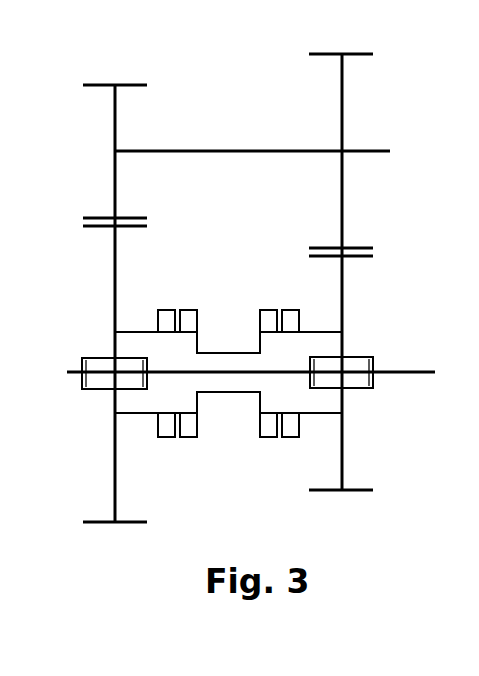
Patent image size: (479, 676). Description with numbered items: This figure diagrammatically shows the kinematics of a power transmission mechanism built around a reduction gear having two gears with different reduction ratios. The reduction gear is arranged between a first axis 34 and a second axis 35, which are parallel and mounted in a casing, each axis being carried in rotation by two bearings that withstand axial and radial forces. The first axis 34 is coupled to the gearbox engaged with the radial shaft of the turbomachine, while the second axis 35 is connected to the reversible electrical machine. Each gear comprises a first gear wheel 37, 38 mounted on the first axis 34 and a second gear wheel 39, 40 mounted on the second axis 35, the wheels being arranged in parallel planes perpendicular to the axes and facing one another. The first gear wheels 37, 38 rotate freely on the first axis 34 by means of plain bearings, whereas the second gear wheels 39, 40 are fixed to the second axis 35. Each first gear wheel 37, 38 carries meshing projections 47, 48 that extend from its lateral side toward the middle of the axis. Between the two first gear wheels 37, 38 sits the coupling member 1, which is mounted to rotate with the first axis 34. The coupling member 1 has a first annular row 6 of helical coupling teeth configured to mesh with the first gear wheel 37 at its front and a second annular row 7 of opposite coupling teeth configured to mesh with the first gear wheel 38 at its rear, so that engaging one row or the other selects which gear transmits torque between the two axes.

The coupling member 1 is at (230, 325).
The first annular row of coupling teeth 6 is at (266, 308).
The second annular row of coupling teeth 7 is at (190, 308).
The first axis 34 is at (393, 374).
The second axis 35 is at (238, 151).
The first gear wheel 37 is at (342, 287).
The first gear wheel 38 is at (113, 453).
The second gear wheel 39 is at (342, 218).
The second gear wheel 40 is at (115, 196).
The meshing projections 47 is at (291, 308).
The meshing projections 48 is at (164, 308).